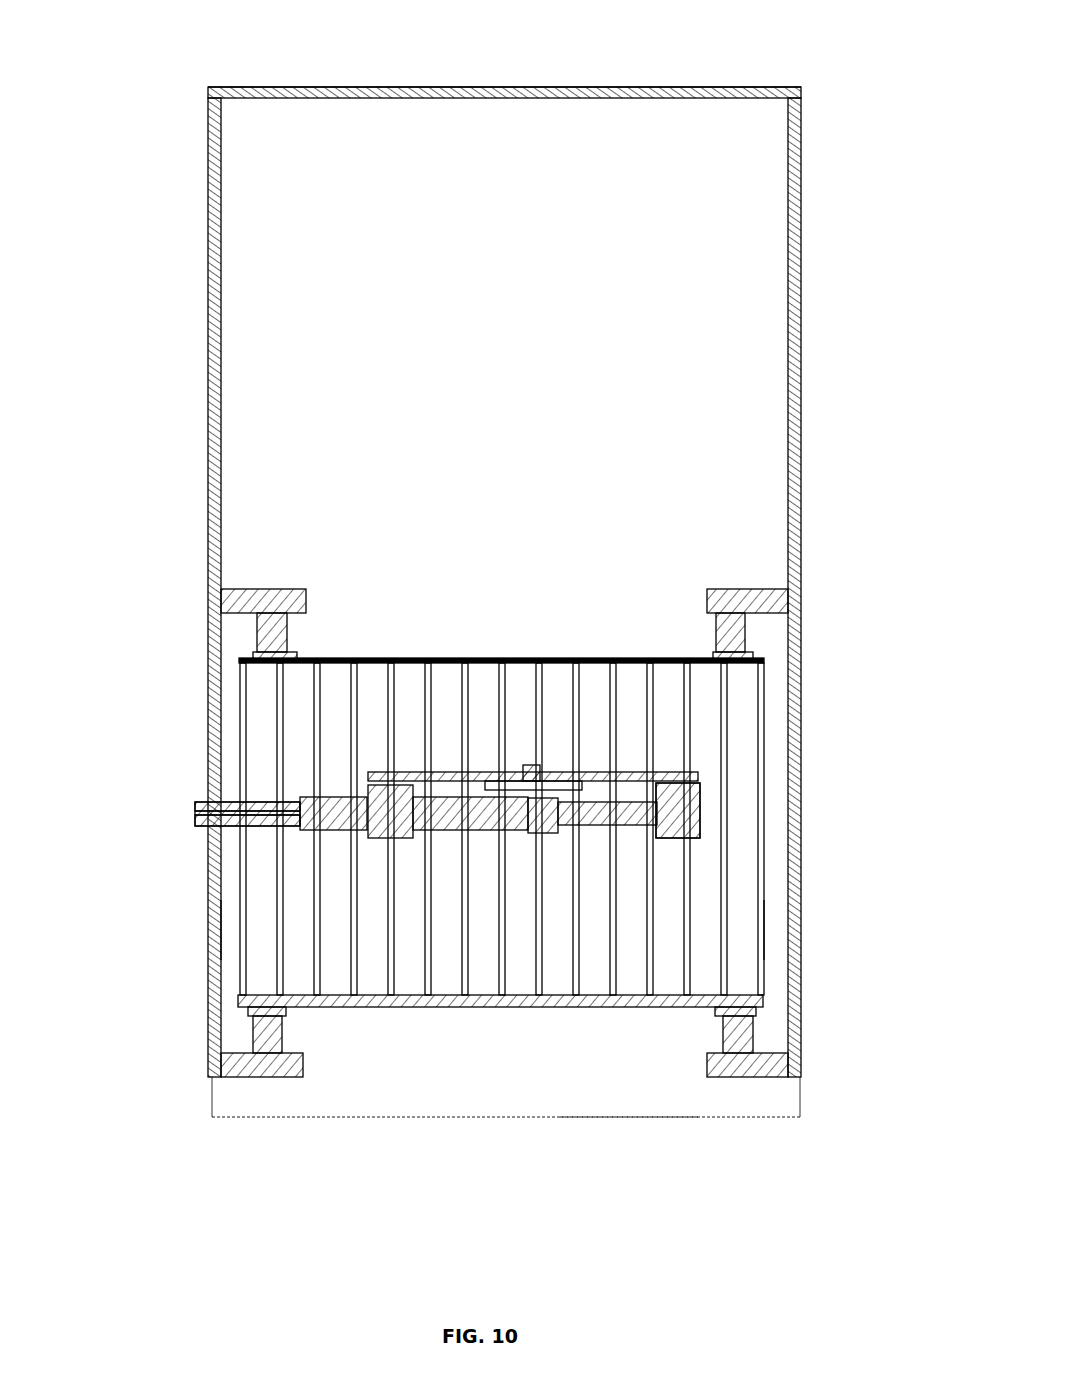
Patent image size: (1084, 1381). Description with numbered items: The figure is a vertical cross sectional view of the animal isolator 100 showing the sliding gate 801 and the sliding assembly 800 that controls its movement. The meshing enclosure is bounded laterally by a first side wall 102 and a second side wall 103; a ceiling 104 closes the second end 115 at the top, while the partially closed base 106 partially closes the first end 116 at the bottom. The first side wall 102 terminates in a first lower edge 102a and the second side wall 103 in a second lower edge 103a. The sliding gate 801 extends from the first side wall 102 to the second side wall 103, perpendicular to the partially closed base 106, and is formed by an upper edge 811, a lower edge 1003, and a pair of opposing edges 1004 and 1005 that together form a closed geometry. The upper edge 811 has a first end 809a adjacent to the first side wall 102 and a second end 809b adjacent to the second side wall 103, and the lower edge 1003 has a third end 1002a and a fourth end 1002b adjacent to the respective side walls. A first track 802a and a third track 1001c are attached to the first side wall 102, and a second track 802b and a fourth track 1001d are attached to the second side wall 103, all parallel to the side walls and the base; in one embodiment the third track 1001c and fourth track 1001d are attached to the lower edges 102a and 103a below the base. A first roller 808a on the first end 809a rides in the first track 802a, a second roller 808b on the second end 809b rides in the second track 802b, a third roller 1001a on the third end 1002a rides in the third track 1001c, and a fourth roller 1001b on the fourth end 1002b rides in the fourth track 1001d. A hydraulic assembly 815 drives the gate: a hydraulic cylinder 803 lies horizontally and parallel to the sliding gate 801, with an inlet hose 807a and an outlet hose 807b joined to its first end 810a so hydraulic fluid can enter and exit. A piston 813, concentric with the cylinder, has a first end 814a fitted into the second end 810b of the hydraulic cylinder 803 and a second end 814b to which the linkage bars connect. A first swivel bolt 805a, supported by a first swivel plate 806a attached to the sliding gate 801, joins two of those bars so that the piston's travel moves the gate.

The animal isolator 100 is at (494, 542).
The first side wall 102 is at (207, 393).
The second side wall 103 is at (790, 316).
The ceiling 104 is at (627, 80).
The second end 115 is at (398, 70).
The partially closed base 106 is at (570, 1118).
The first end 116 is at (626, 1130).
The first lower edge 102a is at (212, 1119).
The second lower edge 103a is at (799, 1120).
The opposing edge 1004 is at (207, 933).
The opposing edge 1005 is at (766, 933).
The sliding assembly 800 is at (491, 821).
The upper edge 811 is at (614, 661).
The sliding gate 801 is at (702, 882).
The lower edge 1003 is at (609, 1009).
The first track 802a is at (234, 597).
The second track 802b is at (773, 597).
The first roller 808a is at (269, 637).
The second roller 808b is at (739, 635).
The first end 809a is at (252, 662).
The second end 809b is at (765, 663).
The third roller 1001a is at (256, 1001).
The fourth roller 1001b is at (738, 1029).
The third track 1001c is at (232, 1062).
The fourth track 1001d is at (758, 1065).
The third end 1002a is at (252, 1019).
The fourth end 1002b is at (736, 1003).
The hydraulic cylinder 803 is at (433, 816).
The inlet hose 807a is at (199, 802).
The outlet hose 807b is at (199, 824).
The first end 810a is at (197, 818).
The second end 810b is at (652, 818).
The piston 813 is at (609, 818).
The first end 814a is at (532, 823).
The second end 814b is at (701, 830).
The hydraulic assembly 815 is at (494, 727).
The first swivel bolt 805a is at (544, 766).
The first swivel plate 806a is at (537, 788).